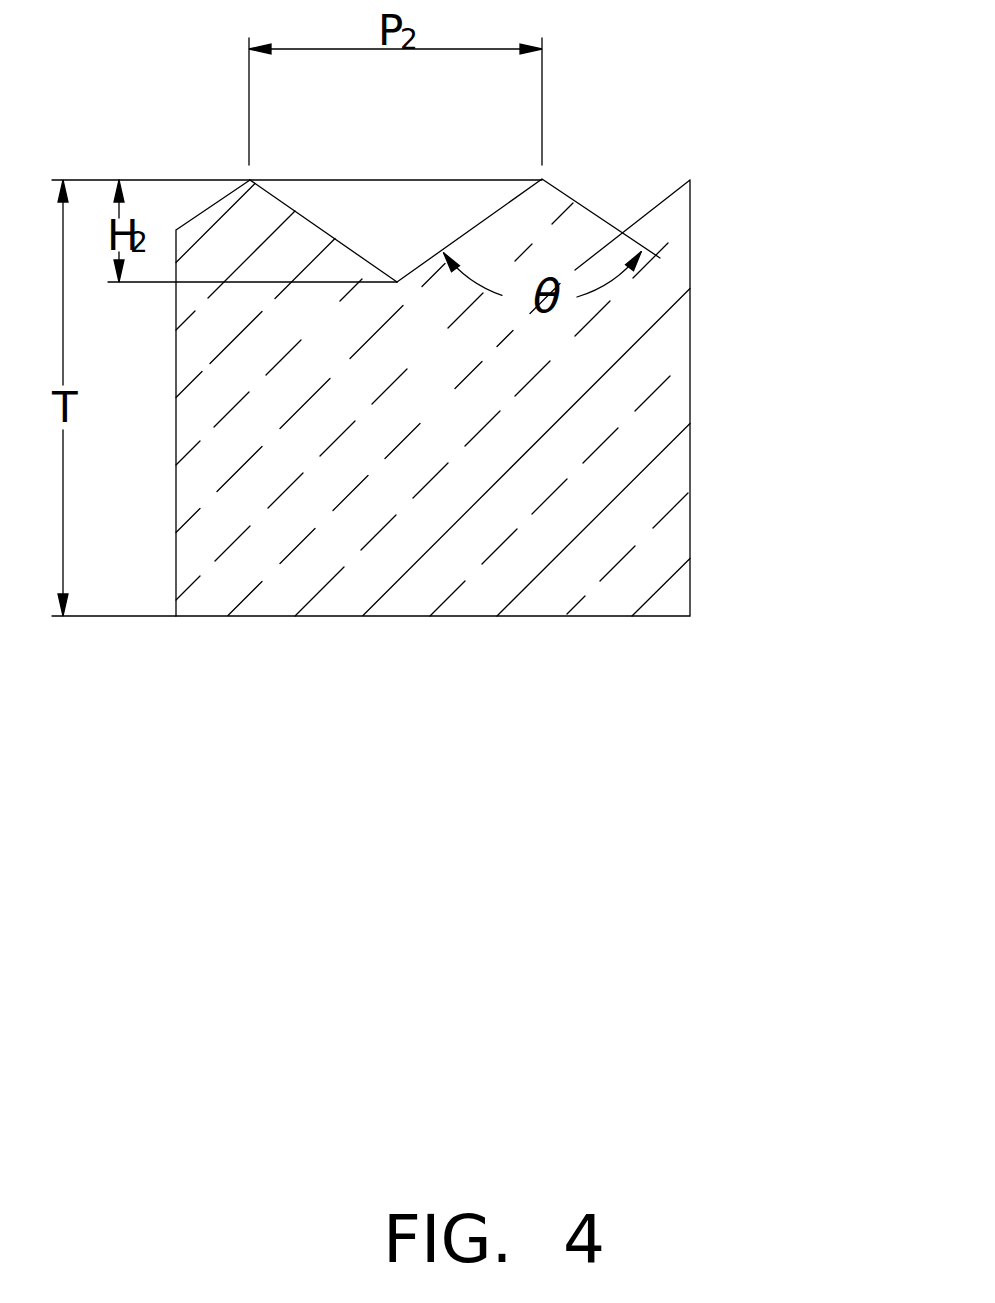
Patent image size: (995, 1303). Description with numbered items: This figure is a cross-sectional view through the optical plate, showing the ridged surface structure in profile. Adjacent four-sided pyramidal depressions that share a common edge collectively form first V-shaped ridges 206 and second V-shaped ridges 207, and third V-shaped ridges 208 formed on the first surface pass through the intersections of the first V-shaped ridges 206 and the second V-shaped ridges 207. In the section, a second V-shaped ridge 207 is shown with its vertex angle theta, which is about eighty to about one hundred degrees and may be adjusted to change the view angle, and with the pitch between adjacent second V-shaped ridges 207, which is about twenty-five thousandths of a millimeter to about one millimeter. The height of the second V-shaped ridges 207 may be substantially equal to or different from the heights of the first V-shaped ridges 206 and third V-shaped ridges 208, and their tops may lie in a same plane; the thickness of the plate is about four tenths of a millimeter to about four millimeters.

The first V-shaped ridge 206 is at (412, 177).
The second V-shaped ridge 207 is at (545, 210).
The third V-shaped ridge 208 is at (678, 208).